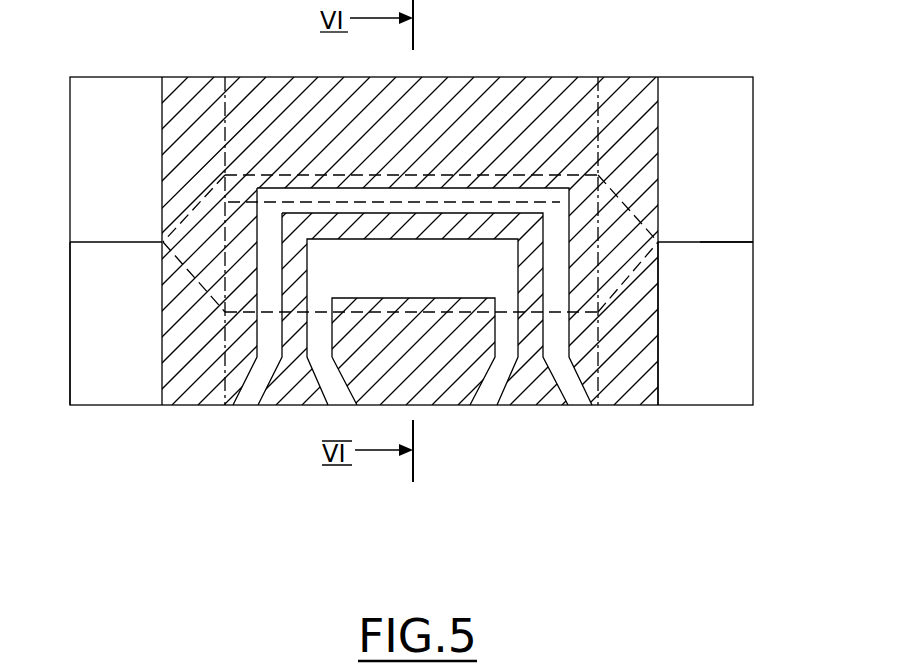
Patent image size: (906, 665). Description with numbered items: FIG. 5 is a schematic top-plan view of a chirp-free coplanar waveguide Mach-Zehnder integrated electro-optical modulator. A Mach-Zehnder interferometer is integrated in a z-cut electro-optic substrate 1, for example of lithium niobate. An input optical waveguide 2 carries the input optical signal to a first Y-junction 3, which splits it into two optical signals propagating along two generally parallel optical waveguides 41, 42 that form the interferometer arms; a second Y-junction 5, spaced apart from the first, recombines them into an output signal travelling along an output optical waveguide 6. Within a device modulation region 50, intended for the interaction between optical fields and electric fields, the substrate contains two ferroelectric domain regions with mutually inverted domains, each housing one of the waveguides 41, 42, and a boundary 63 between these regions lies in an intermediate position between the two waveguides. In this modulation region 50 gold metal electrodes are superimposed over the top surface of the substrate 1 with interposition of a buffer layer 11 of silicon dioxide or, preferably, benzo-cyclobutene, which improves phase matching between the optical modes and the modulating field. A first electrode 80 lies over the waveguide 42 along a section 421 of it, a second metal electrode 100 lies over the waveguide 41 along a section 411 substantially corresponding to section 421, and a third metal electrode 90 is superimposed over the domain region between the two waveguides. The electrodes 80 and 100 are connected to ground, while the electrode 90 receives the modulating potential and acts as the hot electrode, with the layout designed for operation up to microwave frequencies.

The substrate 1 is at (688, 78).
The input optical waveguide 2 is at (110, 243).
The first Y-junction 3 is at (162, 243).
The second Y-junction 5 is at (660, 243).
The output optical waveguide 6 is at (700, 242).
The buffer layer 11 is at (731, 167).
The optical waveguide 41 is at (200, 192).
The optical waveguide 42 is at (165, 352).
The device modulation region 50 is at (600, 492).
The boundary 63 is at (335, 205).
The first electrode 80 is at (443, 392).
The third metal electrode 90 is at (541, 392).
The second metal electrode 100 is at (650, 357).
The section 411 is at (445, 175).
The section 421 is at (340, 380).